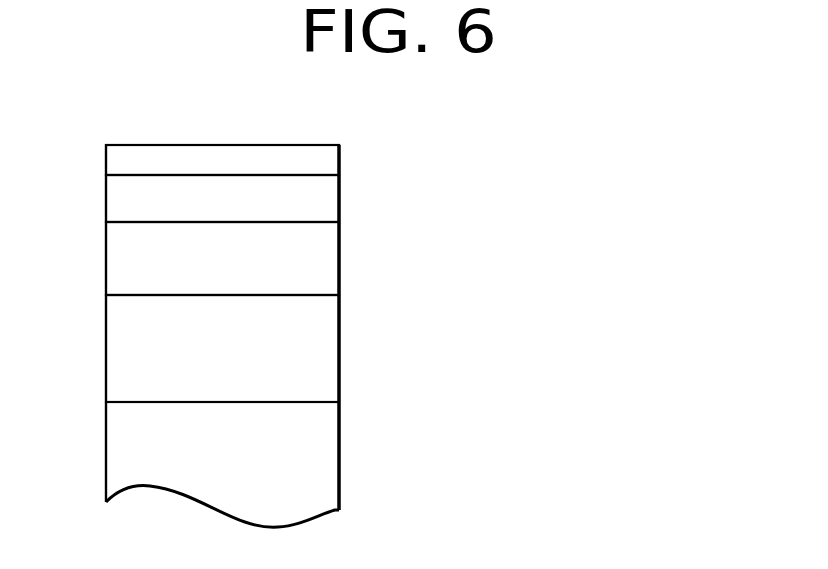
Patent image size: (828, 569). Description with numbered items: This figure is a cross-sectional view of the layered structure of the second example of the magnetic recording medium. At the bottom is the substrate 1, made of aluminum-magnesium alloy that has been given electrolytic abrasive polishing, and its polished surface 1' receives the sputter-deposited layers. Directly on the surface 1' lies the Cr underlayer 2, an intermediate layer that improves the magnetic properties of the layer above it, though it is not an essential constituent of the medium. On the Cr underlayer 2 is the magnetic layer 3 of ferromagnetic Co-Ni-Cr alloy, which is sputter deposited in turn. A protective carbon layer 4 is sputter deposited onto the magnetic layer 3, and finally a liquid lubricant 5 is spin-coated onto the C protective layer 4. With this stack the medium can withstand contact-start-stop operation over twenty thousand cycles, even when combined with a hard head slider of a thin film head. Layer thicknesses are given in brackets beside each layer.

The substrate 1 is at (372, 461).
The surface of the substrate 1' is at (192, 384).
The Cr underlayer 2 is at (333, 360).
The magnetic layer 3 is at (333, 265).
The protective carbon layer 4 is at (333, 205).
The liquid lubricant 5 is at (333, 167).